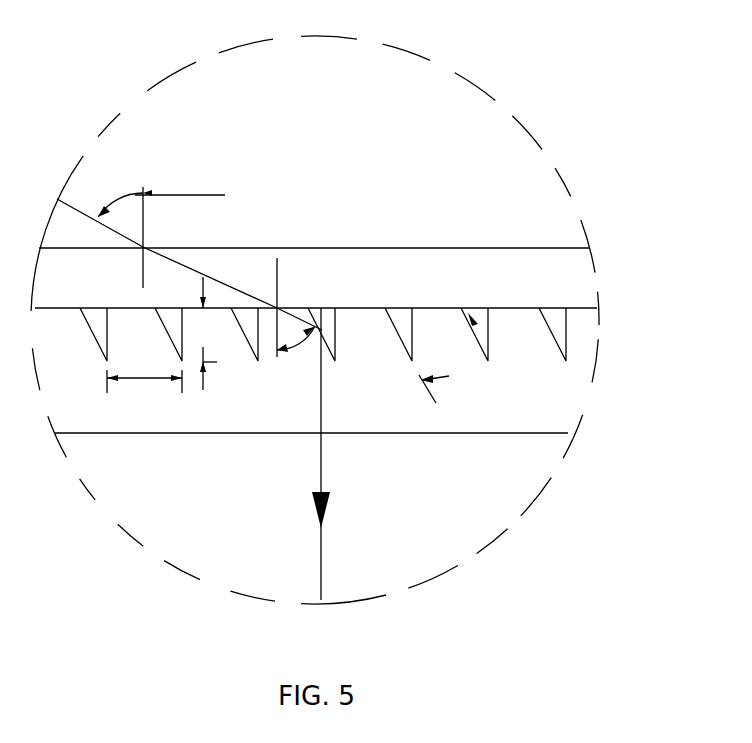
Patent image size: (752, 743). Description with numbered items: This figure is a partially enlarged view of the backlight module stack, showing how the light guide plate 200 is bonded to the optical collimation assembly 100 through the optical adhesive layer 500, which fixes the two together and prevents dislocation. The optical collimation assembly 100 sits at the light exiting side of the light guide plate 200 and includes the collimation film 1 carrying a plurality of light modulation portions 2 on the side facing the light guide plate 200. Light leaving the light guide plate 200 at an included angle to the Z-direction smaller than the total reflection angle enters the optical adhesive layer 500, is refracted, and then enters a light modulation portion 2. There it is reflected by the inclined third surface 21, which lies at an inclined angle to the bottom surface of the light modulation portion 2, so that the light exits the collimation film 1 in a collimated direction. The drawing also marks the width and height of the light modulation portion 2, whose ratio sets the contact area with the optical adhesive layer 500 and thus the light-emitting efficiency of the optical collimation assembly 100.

The light guide plate 200 is at (508, 181).
The optical adhesive layer 500 is at (558, 281).
The third surface 21 is at (543, 319).
The light modulation portion 2 is at (528, 336).
The collimation film 1 is at (533, 389).
The optical collimation assembly 100 is at (562, 406).